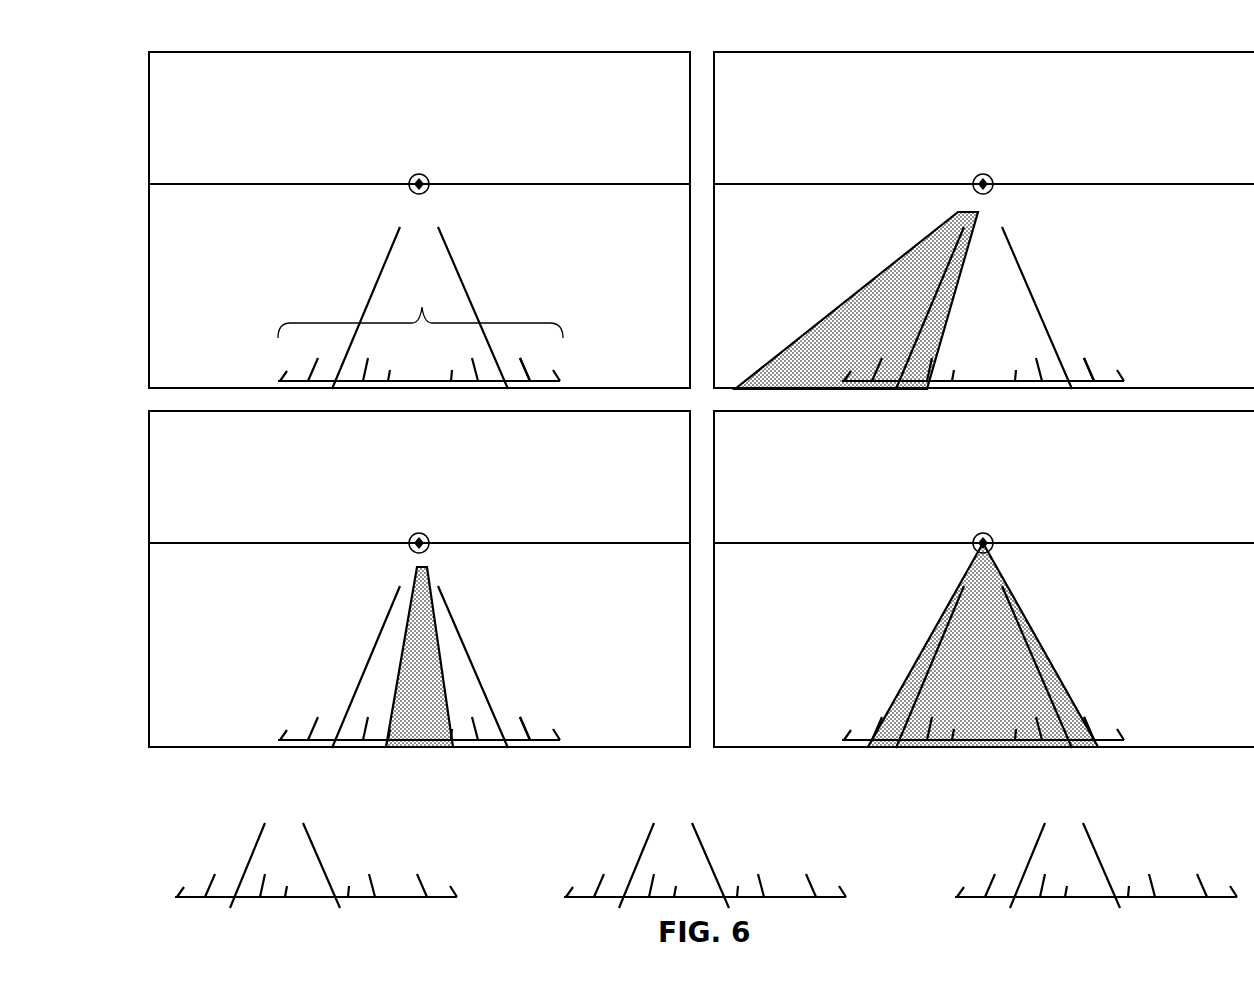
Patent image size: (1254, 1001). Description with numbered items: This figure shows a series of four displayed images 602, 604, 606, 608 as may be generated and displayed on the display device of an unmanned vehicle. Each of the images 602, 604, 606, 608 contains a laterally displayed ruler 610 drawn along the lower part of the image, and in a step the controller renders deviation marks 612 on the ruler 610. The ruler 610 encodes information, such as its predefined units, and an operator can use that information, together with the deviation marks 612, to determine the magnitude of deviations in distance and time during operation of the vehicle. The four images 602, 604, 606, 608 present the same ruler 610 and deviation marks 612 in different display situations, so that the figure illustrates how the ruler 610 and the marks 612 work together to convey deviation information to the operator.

The displayed image 602 is at (218, 52).
The displayed image 604 is at (783, 52).
The displayed image 606 is at (218, 748).
The displayed image 608 is at (783, 748).
The laterally displayed ruler 610 is at (566, 373).
The deviation marks 612 is at (530, 354).